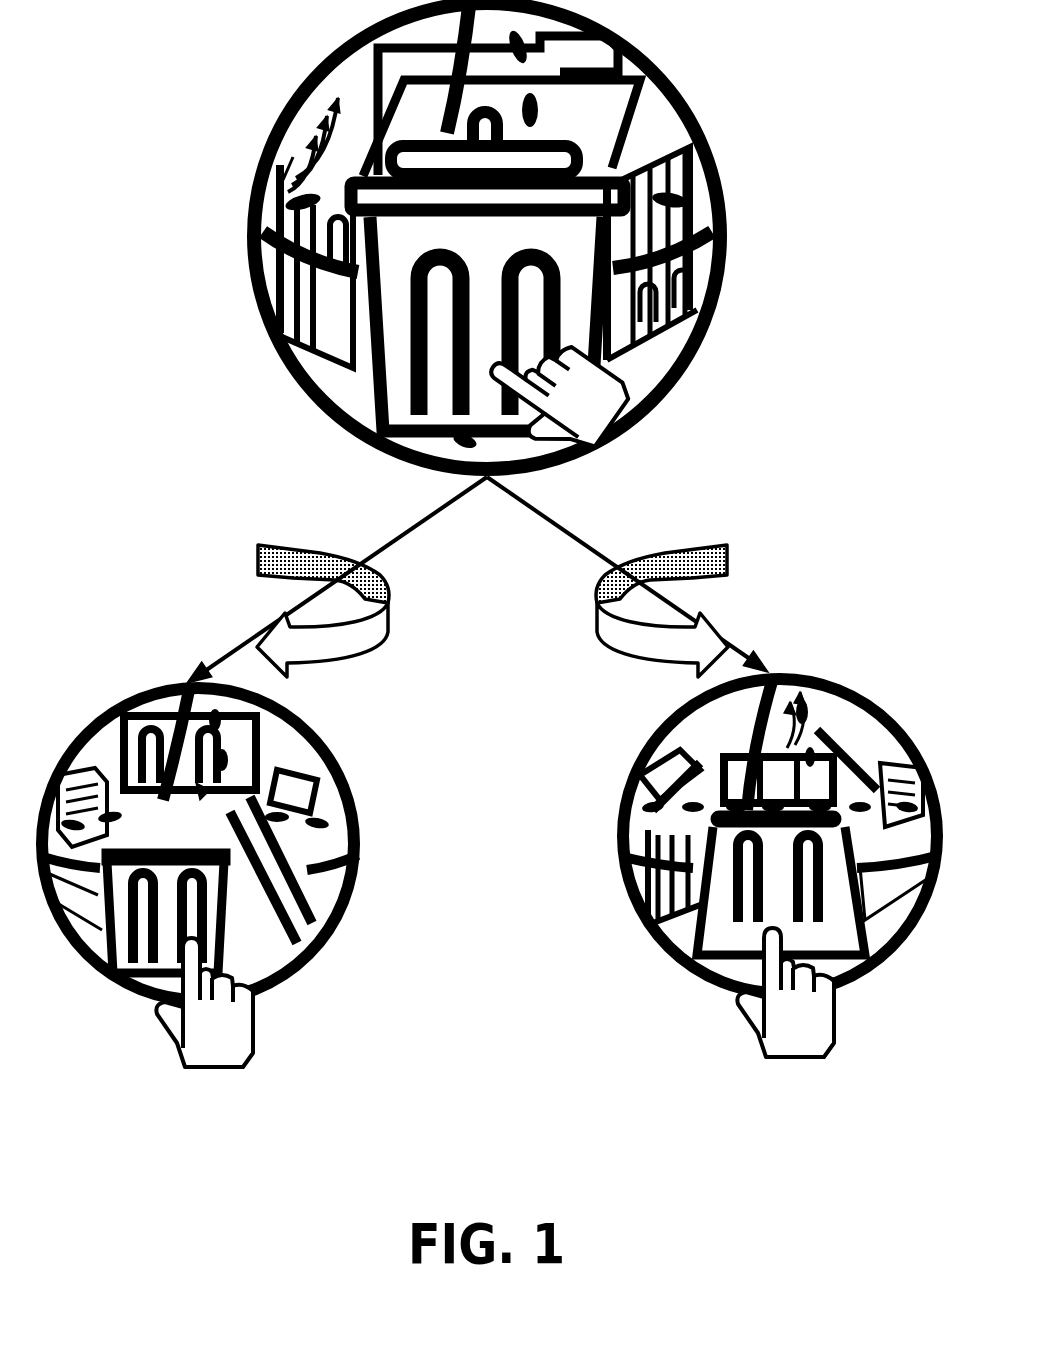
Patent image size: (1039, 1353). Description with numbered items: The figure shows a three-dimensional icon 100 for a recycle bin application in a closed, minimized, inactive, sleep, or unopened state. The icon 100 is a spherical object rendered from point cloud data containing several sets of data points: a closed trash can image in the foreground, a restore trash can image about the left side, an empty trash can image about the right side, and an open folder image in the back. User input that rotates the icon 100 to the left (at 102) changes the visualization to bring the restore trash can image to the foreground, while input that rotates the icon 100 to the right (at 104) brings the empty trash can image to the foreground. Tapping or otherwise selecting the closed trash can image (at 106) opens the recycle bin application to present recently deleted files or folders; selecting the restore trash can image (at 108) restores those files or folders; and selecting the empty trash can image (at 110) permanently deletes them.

The 3D icon 100 is at (728, 213).
The rotate to the left 102 is at (312, 598).
The rotate to the right 104 is at (641, 598).
The selecting the closed trash can image 106 is at (577, 385).
The selecting the restore trash can image 108 is at (212, 1020).
The selecting the empty trash can image 110 is at (792, 1010).